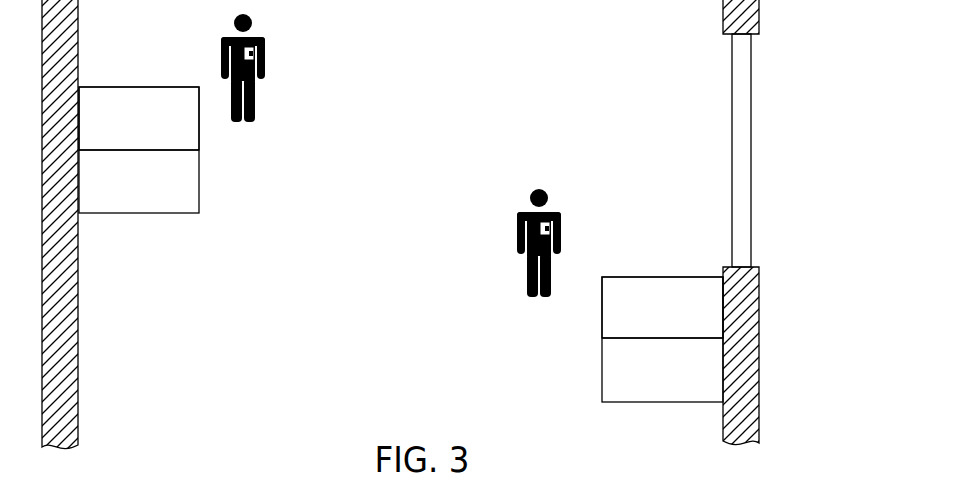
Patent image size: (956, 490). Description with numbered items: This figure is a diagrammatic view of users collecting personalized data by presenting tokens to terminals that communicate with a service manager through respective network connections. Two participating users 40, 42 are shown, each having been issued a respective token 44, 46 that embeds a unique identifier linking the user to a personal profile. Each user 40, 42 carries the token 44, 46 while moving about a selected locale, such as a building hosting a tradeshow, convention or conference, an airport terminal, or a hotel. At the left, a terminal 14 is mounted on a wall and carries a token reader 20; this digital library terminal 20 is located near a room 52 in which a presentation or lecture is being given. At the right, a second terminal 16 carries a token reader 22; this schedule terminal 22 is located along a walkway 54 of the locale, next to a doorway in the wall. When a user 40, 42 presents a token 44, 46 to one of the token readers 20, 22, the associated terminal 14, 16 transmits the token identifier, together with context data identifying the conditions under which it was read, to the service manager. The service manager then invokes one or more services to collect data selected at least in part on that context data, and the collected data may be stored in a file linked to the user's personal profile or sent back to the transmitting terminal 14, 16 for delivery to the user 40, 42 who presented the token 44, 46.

The terminal 14 is at (138, 213).
The terminal 16 is at (602, 392).
The token reader 20 is at (137, 85).
The token reader 22 is at (665, 275).
The user 40 is at (252, 23).
The user 42 is at (548, 198).
The token 44 is at (256, 53).
The token 46 is at (552, 228).
The room 52 is at (814, 203).
The walkway 54 is at (319, 219).